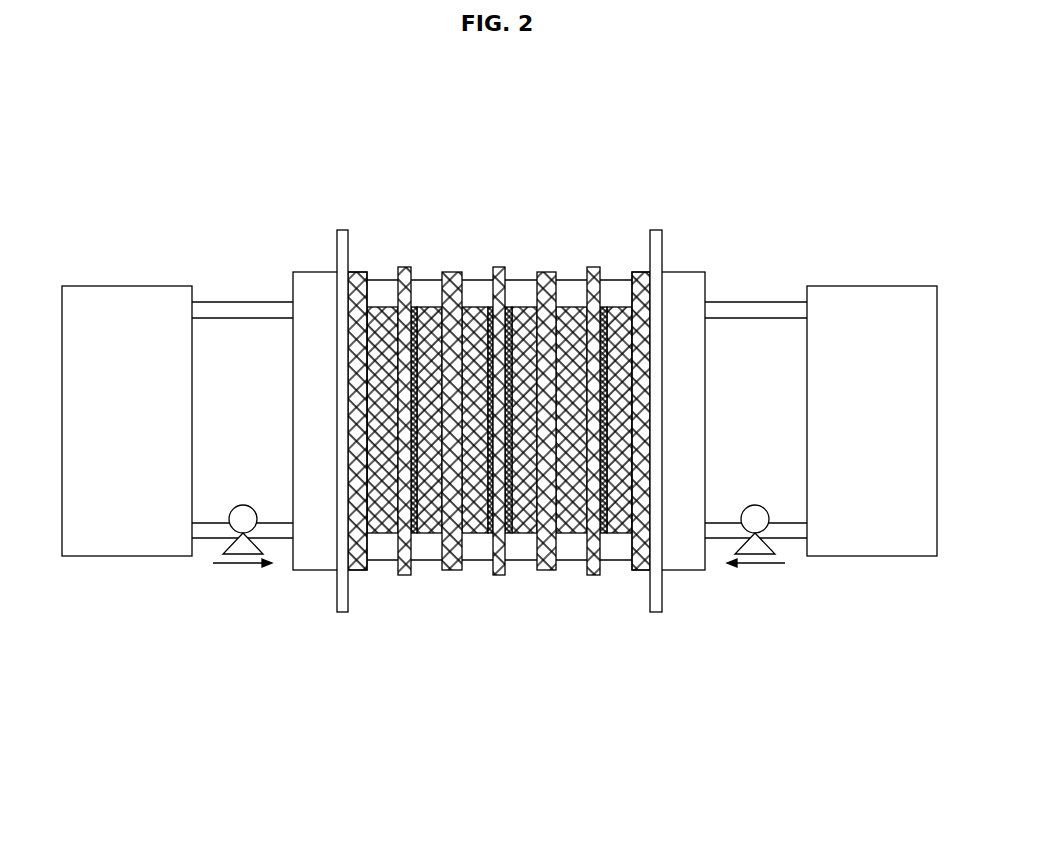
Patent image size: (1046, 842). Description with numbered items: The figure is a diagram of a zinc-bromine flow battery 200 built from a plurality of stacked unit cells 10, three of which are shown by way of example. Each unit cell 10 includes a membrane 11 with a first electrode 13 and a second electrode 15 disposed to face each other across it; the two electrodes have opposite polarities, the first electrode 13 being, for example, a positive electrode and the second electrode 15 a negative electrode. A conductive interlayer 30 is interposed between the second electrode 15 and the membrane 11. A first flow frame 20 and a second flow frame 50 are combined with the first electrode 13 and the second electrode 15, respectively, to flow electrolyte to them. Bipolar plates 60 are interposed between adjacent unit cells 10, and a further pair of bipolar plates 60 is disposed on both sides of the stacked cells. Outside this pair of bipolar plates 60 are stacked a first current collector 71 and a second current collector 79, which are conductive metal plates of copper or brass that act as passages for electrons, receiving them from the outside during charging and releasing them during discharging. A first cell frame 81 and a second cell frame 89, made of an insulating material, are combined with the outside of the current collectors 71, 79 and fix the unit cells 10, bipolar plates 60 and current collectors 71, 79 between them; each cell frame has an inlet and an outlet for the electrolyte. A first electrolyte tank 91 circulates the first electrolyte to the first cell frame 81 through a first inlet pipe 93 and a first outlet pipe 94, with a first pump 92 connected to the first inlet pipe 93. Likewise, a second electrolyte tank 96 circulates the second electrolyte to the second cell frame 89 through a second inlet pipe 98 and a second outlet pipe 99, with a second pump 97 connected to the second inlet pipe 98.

The zinc-bromine flow battery 200 is at (790, 148).
The unit cell 10 is at (583, 690).
The membrane 11 is at (495, 577).
The first electrode 13 is at (487, 533).
The second electrode 15 is at (517, 538).
The first flow frame 20 is at (473, 552).
The conductive interlayer 30 is at (603, 414).
The second flow frame 50 is at (530, 553).
The bipolar plate 60 is at (356, 274).
The first current collector 71 is at (345, 228).
The second current collector 79 is at (655, 228).
The first cell frame 81 is at (318, 278).
The second cell frame 89 is at (680, 278).
The first electrolyte tank 91 is at (122, 295).
The first pump 92 is at (243, 505).
The first inlet pipe 93 is at (207, 542).
The first outlet pipe 94 is at (235, 318).
The second electrolyte tank 96 is at (876, 297).
The second pump 97 is at (755, 505).
The second inlet pipe 98 is at (792, 542).
The second outlet pipe 99 is at (762, 318).